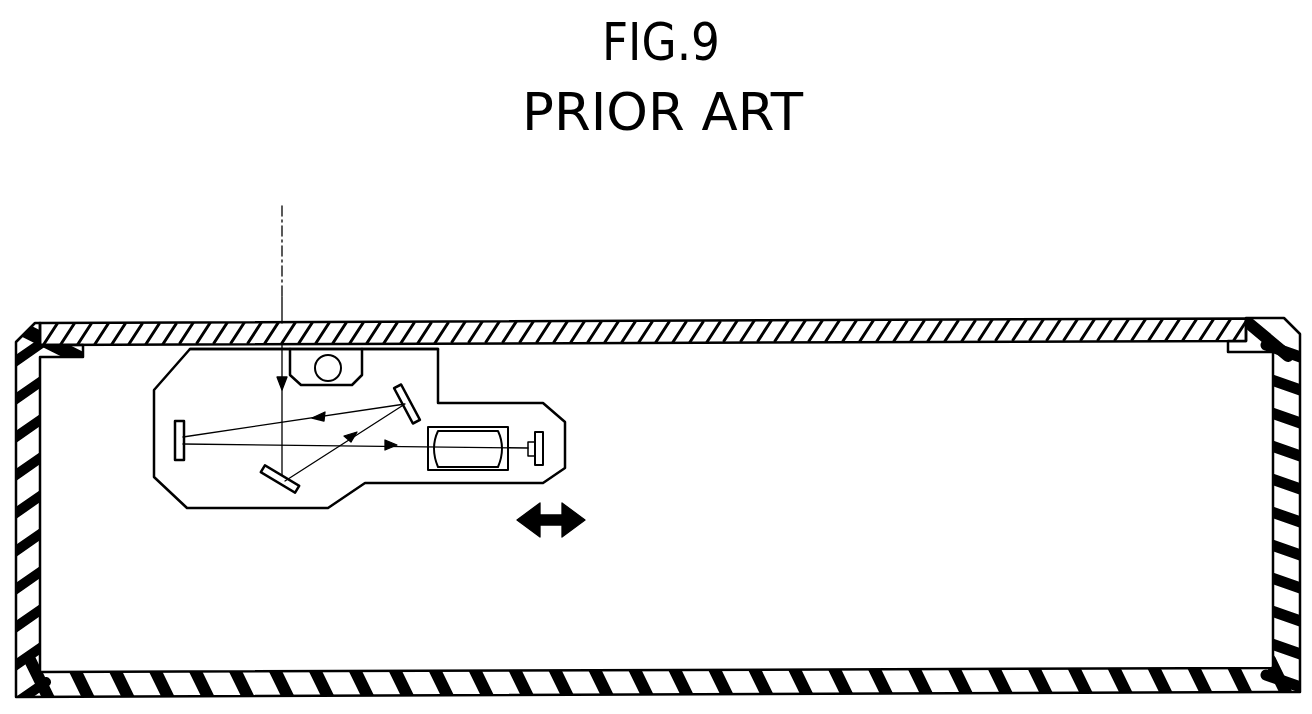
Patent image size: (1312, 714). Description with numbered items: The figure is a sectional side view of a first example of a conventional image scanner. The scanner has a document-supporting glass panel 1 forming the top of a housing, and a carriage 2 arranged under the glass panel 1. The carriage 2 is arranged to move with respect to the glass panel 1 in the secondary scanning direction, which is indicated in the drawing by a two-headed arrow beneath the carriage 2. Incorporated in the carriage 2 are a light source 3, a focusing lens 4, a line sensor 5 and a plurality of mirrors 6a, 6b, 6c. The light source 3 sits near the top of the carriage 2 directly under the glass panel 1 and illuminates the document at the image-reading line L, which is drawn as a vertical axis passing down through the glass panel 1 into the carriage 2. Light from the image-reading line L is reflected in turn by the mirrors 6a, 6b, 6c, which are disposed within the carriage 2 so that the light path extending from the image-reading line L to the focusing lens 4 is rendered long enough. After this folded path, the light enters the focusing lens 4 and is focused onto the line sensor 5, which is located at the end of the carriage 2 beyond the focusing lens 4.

The document-supporting glass panel 1 is at (830, 321).
The carriage 2 is at (478, 486).
The light source 3 is at (332, 362).
The focusing lens 4 is at (480, 427).
The line sensor 5 is at (543, 445).
The mirror 6a is at (285, 488).
The mirror 6b is at (413, 387).
The mirror 6c is at (175, 452).
The image-reading line L is at (283, 298).